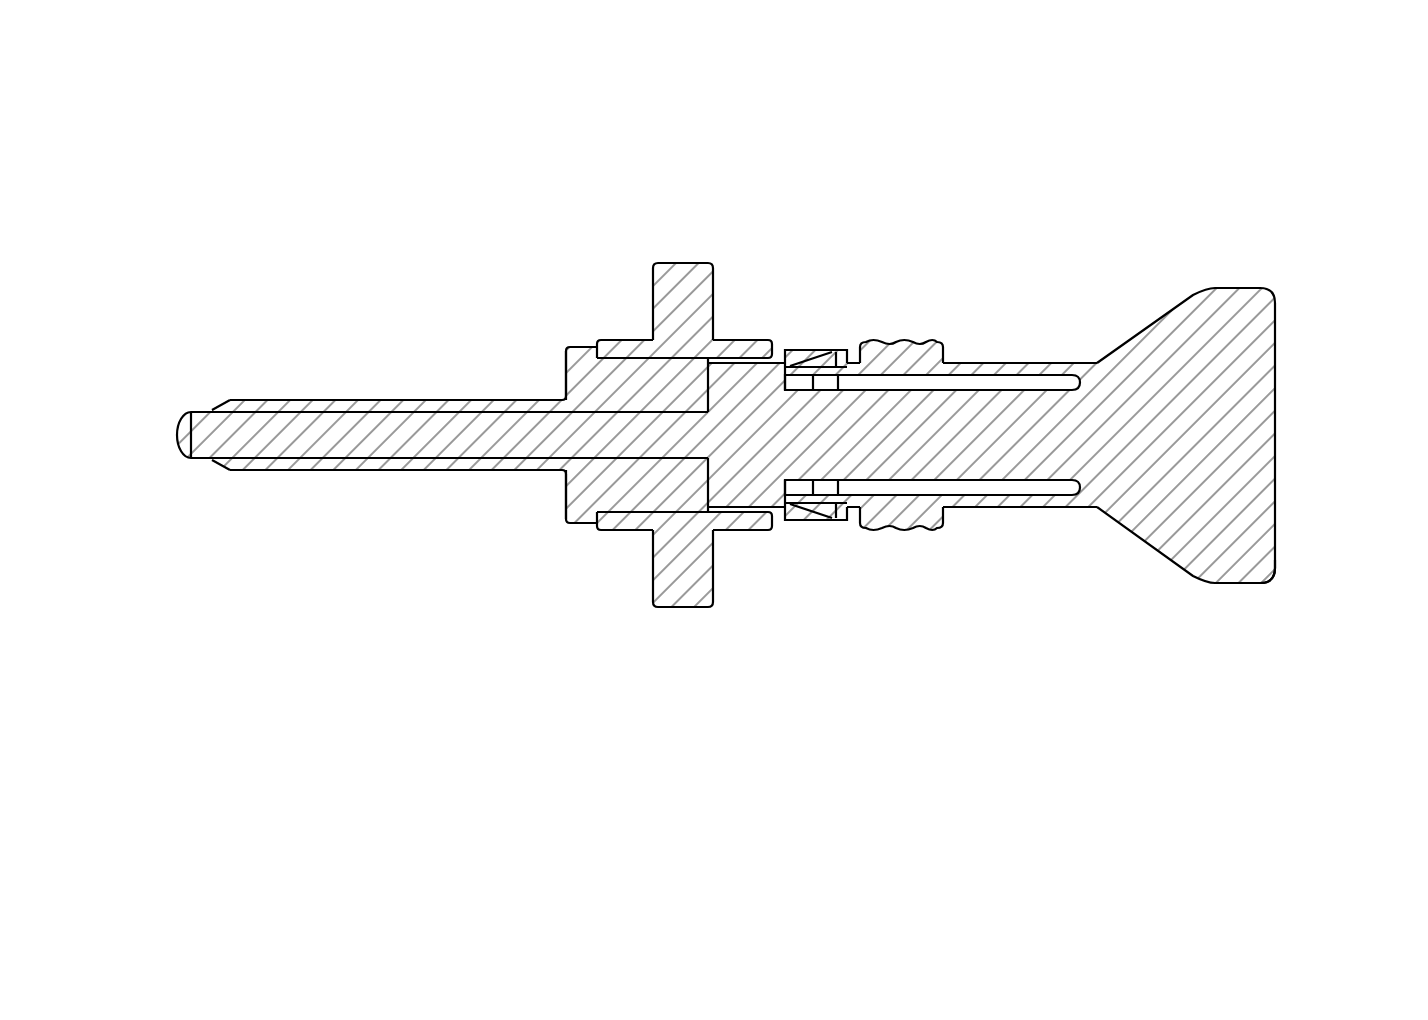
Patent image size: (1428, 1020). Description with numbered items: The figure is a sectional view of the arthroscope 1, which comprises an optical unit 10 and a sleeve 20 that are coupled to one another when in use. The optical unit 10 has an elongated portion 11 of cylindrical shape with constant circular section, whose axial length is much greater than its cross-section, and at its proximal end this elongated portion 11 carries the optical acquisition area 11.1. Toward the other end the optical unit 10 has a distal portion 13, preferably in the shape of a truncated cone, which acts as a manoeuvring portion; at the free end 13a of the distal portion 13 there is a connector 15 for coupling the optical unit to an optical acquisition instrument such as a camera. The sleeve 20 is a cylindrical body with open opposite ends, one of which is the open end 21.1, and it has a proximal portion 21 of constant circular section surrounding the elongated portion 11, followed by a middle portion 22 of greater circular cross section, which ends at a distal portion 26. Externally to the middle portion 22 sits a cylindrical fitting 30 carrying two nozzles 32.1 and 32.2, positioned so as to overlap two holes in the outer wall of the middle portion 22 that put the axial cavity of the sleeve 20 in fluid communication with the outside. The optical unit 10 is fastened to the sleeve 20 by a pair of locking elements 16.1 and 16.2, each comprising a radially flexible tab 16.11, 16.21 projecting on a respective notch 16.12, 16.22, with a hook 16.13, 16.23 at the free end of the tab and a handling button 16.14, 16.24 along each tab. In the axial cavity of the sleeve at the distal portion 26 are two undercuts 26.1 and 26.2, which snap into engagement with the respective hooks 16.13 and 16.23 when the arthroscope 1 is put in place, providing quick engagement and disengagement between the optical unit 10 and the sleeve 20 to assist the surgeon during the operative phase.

The arthroscope 1 is at (493, 157).
The optical unit 10 is at (1133, 270).
The elongated portion 11 is at (401, 436).
The optical acquisition area 11.1 is at (183, 430).
The distal portion 13 is at (1233, 287).
The free end 13a is at (1277, 563).
The connector 15 is at (1281, 399).
The locking element 16.1 is at (891, 320).
The radially flexible tab 16.11 is at (1042, 378).
The notch 16.12 is at (1015, 380).
The hook 16.13 is at (810, 368).
The handling button 16.14 is at (920, 340).
The locking element 16.2 is at (866, 560).
The radially flexible tab 16.21 is at (1043, 498).
The notch 16.22 is at (995, 485).
The hook 16.23 is at (807, 502).
The handling button 16.24 is at (915, 515).
The sleeve 20 is at (220, 310).
The proximal portion 21 is at (309, 405).
The open end 21.1 is at (228, 465).
The middle portion 22 is at (582, 385).
The distal portion 26 is at (835, 350).
The undercut 26.1 is at (792, 357).
The undercut 26.2 is at (790, 513).
The cylindrical fitting 30 is at (747, 348).
The nozzle 32.1 is at (675, 590).
The nozzle 32.2 is at (675, 278).